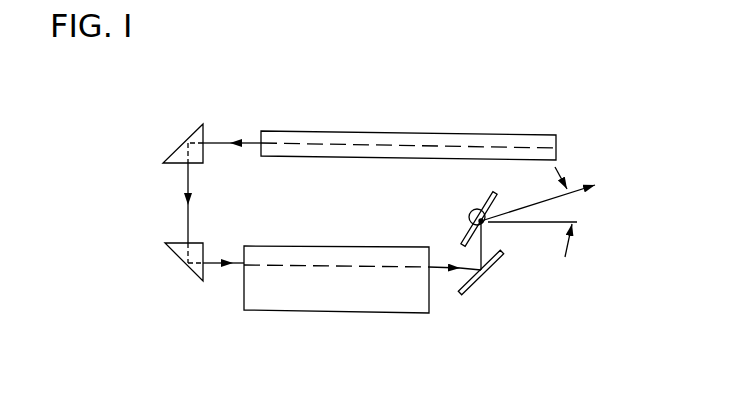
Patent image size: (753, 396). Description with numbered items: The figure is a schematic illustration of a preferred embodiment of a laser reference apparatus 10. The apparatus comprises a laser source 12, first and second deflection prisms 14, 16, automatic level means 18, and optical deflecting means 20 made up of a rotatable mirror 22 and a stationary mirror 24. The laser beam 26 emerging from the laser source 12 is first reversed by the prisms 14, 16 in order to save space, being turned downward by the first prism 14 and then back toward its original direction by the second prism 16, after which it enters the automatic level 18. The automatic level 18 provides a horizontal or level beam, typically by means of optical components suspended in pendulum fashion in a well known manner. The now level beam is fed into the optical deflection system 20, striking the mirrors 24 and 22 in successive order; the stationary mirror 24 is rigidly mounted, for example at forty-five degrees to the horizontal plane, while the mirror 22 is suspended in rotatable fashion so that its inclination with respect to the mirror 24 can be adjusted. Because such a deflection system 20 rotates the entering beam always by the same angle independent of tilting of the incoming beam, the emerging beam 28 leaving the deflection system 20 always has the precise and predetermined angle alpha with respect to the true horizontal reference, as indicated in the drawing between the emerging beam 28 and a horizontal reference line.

The laser reference apparatus 10 is at (628, 163).
The laser source 12 is at (447, 131).
The first deflection prism 14 is at (177, 148).
The second deflection prism 16 is at (178, 257).
The automatic level means 18 is at (328, 305).
The optical deflecting means 20 is at (490, 227).
The rotatable mirror 22 is at (497, 203).
The stationary mirror 24 is at (474, 281).
The laser beam 26 is at (237, 136).
The emerging beam 28 is at (586, 181).